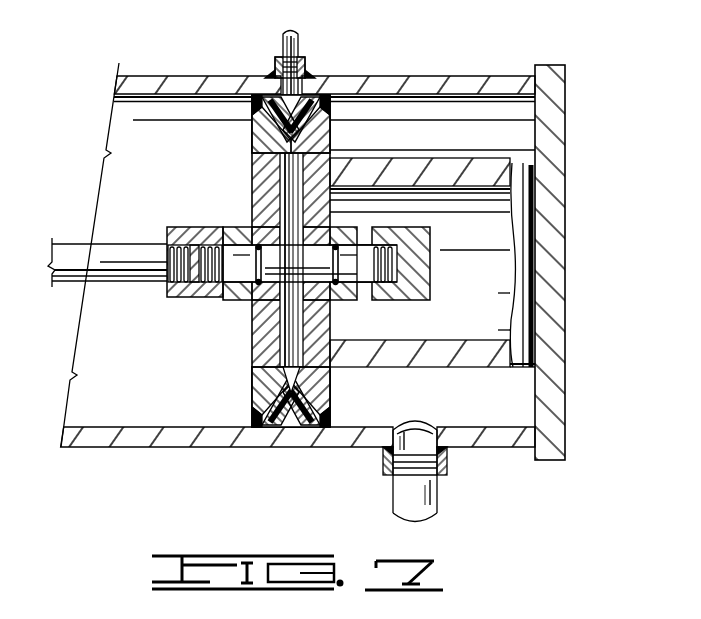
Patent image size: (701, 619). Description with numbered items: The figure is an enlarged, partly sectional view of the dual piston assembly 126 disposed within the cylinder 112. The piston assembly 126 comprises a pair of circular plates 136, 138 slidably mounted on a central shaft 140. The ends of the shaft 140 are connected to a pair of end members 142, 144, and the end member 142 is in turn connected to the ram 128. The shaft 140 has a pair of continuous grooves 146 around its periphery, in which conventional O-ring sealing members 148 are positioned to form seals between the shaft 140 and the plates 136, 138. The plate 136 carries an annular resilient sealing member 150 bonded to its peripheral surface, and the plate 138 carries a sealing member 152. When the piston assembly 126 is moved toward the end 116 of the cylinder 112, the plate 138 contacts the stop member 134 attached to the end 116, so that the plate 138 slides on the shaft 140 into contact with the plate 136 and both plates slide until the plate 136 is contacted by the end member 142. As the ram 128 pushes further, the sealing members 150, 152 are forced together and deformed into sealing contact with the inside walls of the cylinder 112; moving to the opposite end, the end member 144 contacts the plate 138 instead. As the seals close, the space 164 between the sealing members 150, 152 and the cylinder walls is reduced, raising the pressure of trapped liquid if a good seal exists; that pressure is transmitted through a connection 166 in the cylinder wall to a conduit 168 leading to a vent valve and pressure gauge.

The cylinder 112 is at (435, 86).
The end of the cylinder 116 is at (566, 110).
The dual piston assembly 126 is at (246, 164).
The ram 128 is at (70, 250).
The stop member 134 is at (438, 163).
The circular plate 136 is at (253, 202).
The circular plate 138 is at (330, 153).
The central shaft 140 is at (225, 297).
The end member 142 is at (167, 296).
The end member 144 is at (422, 250).
The continuous grooves 146 is at (334, 255).
The O-ring sealing members 148 is at (238, 262).
The annular resilient sealing member 150 is at (253, 120).
The sealing member 152 is at (328, 106).
The space 164 is at (309, 100).
The connection 166 is at (296, 66).
The conduit 168 is at (282, 38).